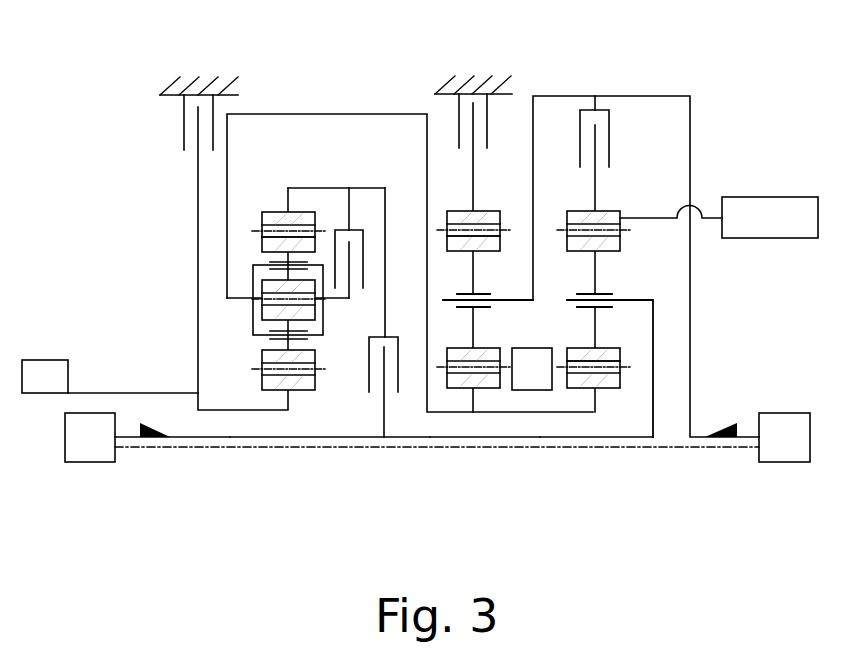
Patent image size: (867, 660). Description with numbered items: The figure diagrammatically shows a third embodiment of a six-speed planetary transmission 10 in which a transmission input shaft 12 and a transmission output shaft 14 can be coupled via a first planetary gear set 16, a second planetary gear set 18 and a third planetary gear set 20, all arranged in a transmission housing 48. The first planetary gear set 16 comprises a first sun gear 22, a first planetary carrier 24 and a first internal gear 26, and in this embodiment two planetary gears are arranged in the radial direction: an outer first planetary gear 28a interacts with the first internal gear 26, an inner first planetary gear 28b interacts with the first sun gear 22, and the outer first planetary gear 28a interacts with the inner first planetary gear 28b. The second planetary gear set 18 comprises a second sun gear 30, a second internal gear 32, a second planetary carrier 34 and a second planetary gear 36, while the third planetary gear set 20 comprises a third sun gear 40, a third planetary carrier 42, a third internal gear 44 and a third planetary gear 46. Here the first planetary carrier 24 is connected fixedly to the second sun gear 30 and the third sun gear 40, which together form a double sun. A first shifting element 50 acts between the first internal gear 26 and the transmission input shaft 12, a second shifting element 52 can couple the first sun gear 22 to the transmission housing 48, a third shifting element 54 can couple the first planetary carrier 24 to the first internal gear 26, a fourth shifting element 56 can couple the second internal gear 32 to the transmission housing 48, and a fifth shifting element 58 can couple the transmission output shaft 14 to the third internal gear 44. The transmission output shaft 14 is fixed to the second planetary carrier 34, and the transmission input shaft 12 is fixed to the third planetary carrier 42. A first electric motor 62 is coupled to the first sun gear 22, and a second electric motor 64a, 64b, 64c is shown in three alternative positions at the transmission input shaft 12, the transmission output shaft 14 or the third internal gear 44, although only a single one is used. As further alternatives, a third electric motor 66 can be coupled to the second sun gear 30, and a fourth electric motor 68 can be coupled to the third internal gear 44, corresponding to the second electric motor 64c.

The 6-speed planetary transmission 10 is at (710, 82).
The transmission input shaft 12 is at (157, 442).
The transmission output shaft 14 is at (715, 428).
The first planetary gear set 16 is at (278, 470).
The second planetary gear set 18 is at (490, 463).
The third planetary gear set 20 is at (594, 470).
The first sun gear 22 is at (250, 413).
The first planetary carrier 24 is at (255, 312).
The first internal gear 26 is at (270, 214).
The outer first planetary gear 28a is at (275, 242).
The inner first planetary gear 28b is at (275, 350).
The second sun gear 30 is at (470, 402).
The second internal gear 32 is at (482, 212).
The second planetary carrier 34 is at (518, 303).
The second planetary gear 36 is at (483, 246).
The third sun gear 40 is at (582, 416).
The third planetary carrier 42 is at (635, 300).
The third internal gear 44 is at (614, 212).
The third planetary gear 46 is at (605, 356).
The transmission housing 48 is at (215, 90).
The first shifting element 50 is at (372, 404).
The second shifting element 52 is at (162, 123).
The third shifting element 54 is at (321, 226).
The fourth shifting element 56 is at (445, 110).
The fifth shifting element 58 is at (620, 123).
The first electric motor 62 is at (110, 376).
The second electric motor 64a is at (90, 437).
The second electric motor 64b is at (784, 437).
The second electric motor 64c is at (770, 217).
The third electric motor 66 is at (532, 369).
The fourth electric motor 68 is at (716, 217).